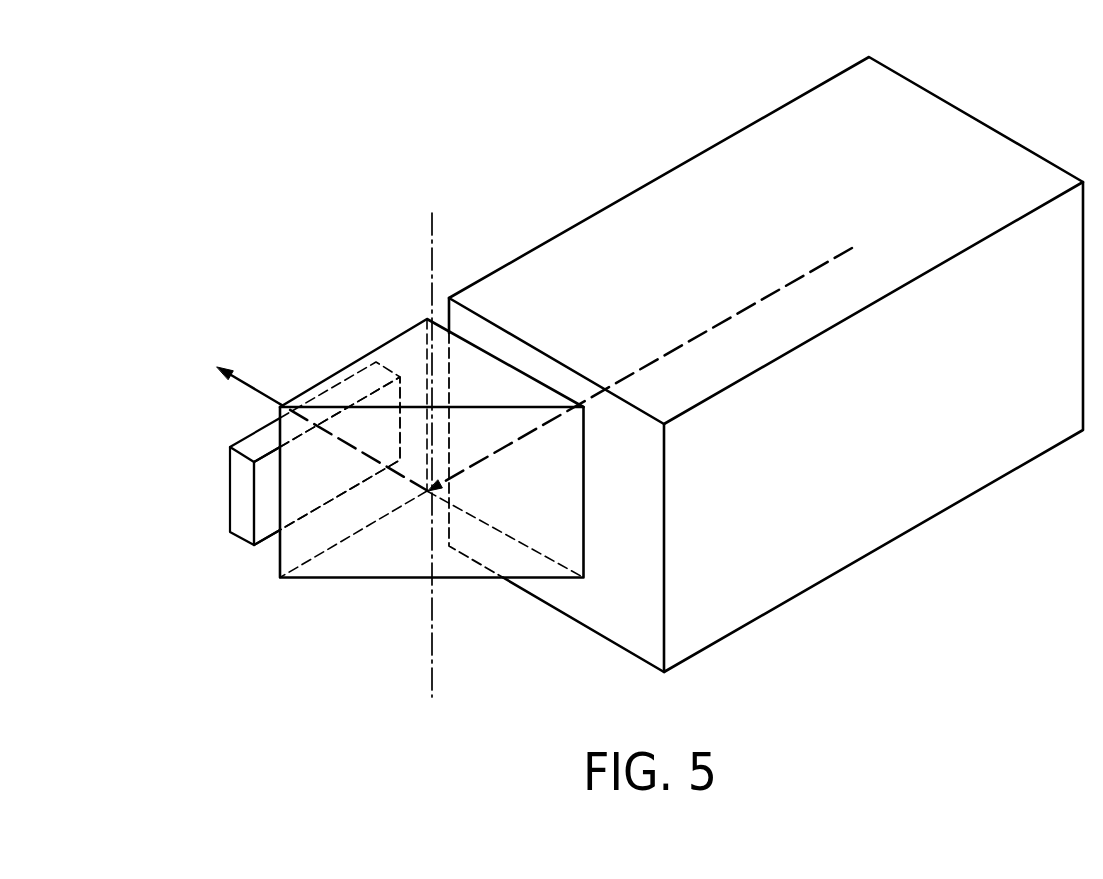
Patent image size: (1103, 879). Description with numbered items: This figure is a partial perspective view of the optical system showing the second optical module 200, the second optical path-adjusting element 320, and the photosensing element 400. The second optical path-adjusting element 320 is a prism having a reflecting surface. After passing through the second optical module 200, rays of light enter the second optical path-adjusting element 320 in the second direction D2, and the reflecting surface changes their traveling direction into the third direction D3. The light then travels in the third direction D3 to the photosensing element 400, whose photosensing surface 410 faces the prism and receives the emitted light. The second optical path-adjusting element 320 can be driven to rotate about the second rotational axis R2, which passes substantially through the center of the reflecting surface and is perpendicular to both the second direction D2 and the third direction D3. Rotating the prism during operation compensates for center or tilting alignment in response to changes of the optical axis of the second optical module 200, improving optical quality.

The second optical module 200 is at (697, 210).
The second optical path-adjusting element 320 is at (367, 557).
The photosensing element 400 is at (240, 497).
The photosensing surface 410 is at (267, 502).
The second rotational axis R2 is at (431, 436).
The second direction D2 is at (665, 360).
The third direction D3 is at (299, 418).